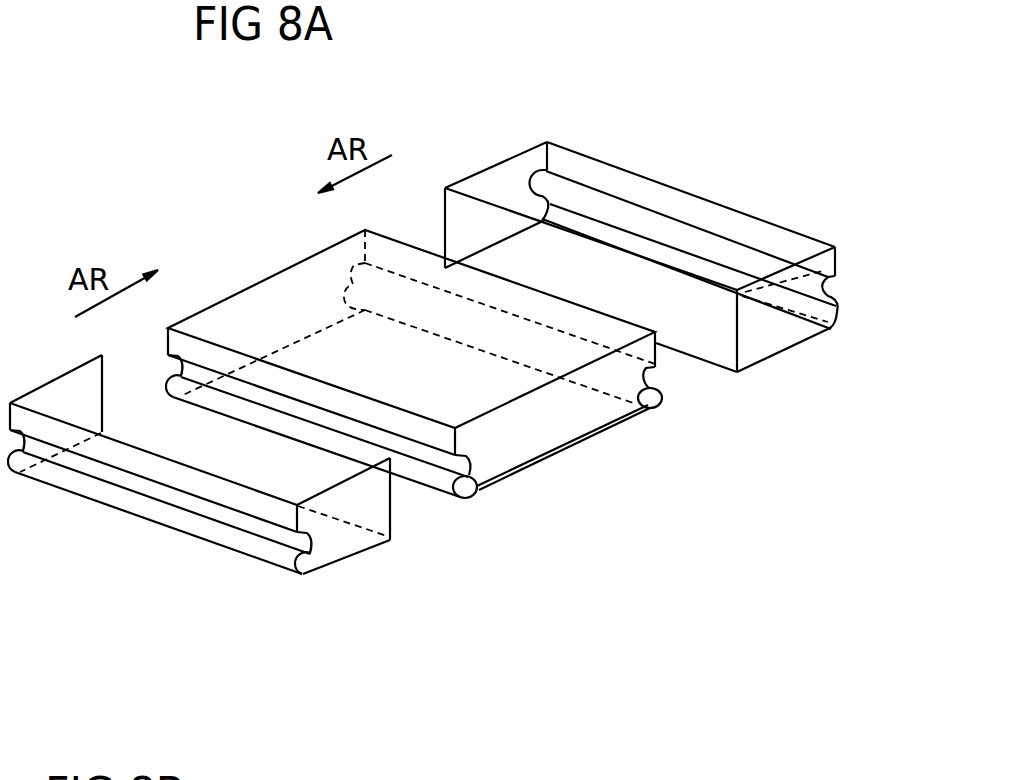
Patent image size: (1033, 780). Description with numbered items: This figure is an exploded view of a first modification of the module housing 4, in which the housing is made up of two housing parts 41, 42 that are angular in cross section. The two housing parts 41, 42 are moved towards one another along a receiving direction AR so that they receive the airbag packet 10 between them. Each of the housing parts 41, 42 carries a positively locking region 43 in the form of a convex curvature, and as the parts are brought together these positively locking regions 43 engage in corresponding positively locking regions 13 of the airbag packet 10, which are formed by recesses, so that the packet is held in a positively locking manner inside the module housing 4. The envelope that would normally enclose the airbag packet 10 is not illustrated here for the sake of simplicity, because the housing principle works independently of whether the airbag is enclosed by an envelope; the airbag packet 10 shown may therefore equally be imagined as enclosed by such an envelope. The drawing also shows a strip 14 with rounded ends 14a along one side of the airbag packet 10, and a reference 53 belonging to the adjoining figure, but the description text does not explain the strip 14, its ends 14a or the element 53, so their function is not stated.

The module housing 4 is at (717, 124).
The airbag packet 10 is at (260, 281).
The positively locking regions 13 is at (642, 377).
The strip 14 is at (563, 448).
The rounded end of strip 14a is at (651, 408).
The housing part 41 is at (338, 537).
The housing part 42 is at (777, 335).
The positively locking regions 43 is at (153, 493).
The element of FIG 8B 53 is at (533, 765).